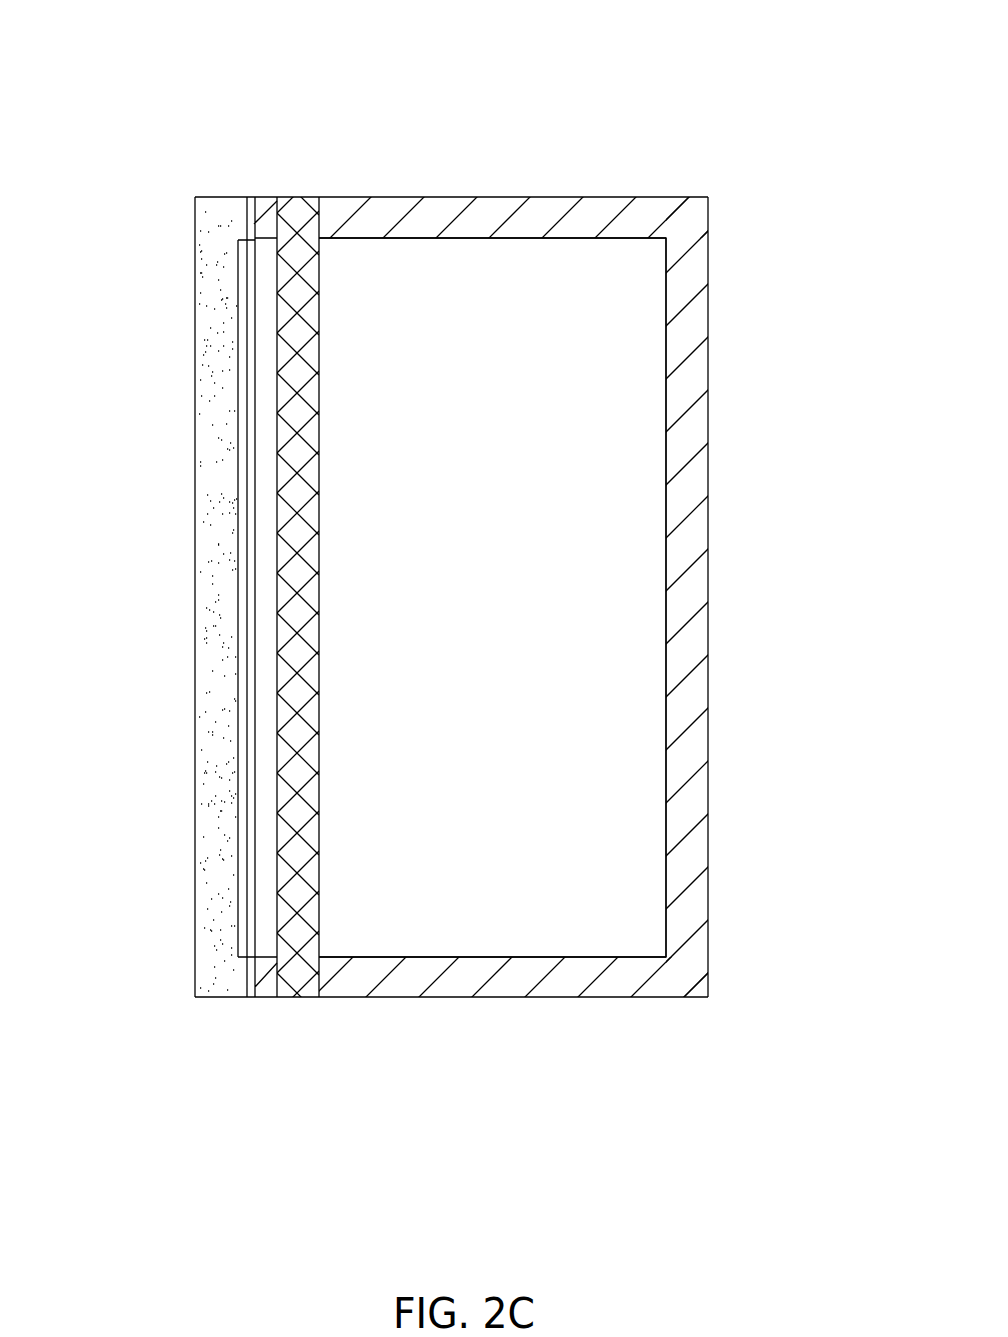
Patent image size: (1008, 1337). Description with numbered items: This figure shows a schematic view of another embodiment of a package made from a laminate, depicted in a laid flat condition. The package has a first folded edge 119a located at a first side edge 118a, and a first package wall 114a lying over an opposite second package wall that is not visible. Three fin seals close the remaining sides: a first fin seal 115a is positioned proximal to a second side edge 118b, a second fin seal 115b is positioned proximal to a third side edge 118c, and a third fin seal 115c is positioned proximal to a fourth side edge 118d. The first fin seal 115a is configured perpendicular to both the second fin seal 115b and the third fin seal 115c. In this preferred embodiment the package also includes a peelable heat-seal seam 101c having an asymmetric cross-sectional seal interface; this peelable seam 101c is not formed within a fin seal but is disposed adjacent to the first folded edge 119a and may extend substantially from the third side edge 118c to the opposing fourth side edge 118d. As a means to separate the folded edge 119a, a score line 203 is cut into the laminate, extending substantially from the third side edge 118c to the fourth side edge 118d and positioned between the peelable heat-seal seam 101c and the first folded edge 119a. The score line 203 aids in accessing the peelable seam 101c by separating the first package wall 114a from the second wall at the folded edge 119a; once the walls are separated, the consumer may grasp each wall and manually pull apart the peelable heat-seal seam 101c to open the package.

The peelable heat-seal seam 101c is at (290, 471).
The first package wall 114a is at (602, 325).
The first fin seal 115a is at (688, 482).
The second fin seal 115b is at (588, 212).
The third fin seal 115c is at (352, 980).
The first side edge 118a is at (196, 847).
The second side edge 118b is at (710, 635).
The third side edge 118c is at (391, 197).
The fourth side edge 118d is at (557, 998).
The first folded edge 119a is at (217, 647).
The score line 203 is at (247, 392).